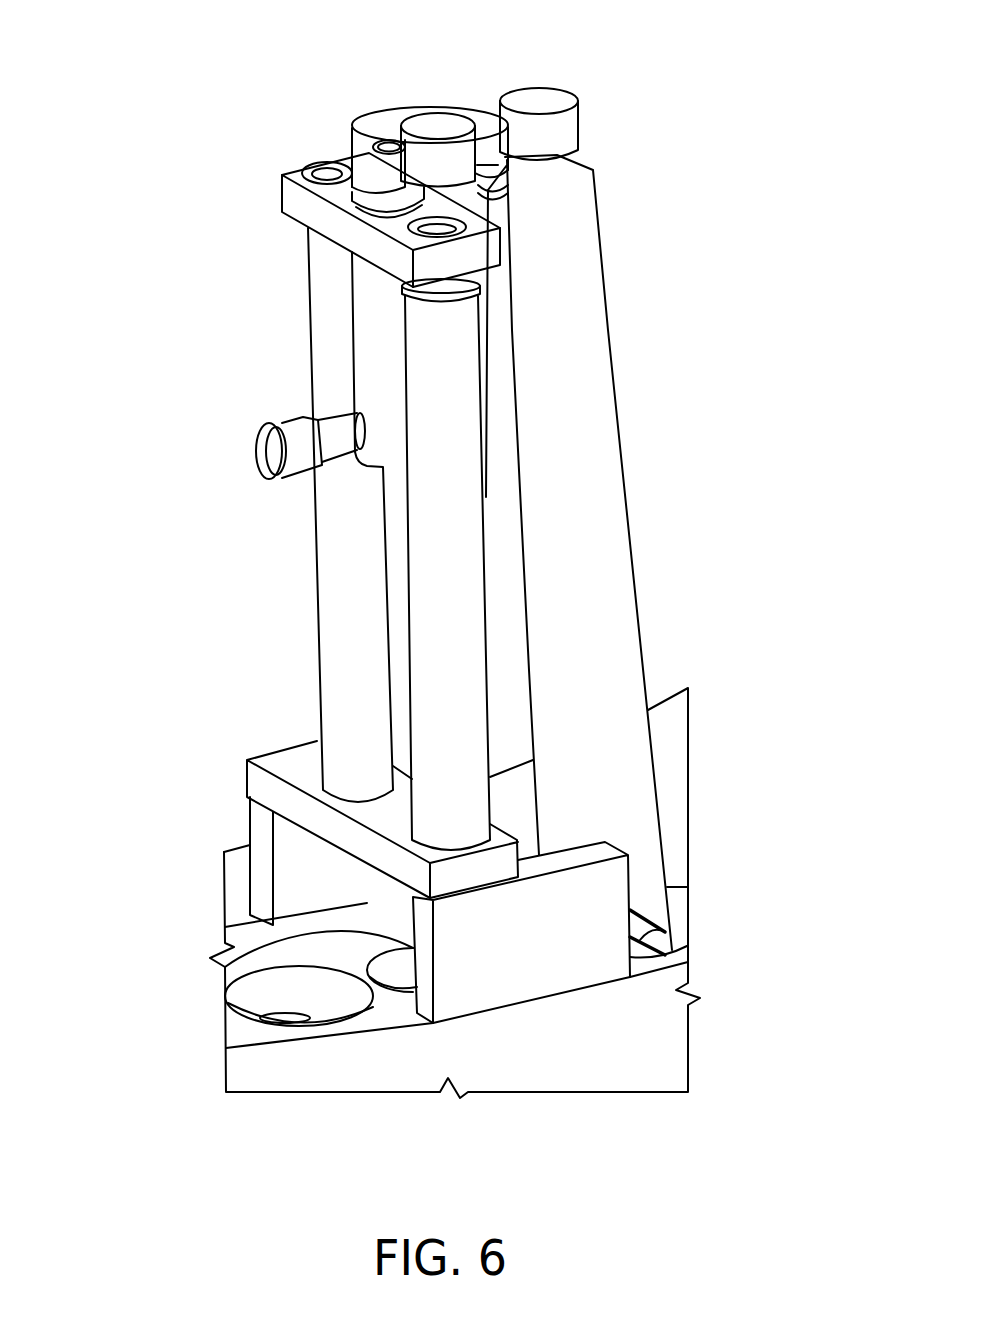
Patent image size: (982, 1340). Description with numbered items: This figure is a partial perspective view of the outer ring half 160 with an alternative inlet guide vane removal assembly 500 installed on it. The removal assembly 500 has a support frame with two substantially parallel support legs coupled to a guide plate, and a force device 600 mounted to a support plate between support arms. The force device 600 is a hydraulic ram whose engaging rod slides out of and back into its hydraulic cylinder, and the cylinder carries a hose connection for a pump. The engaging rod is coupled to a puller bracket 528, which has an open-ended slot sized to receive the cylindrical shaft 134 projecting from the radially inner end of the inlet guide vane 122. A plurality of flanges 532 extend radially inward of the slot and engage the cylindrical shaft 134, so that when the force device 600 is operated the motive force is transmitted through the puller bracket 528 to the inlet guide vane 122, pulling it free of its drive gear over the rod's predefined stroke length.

The puller bracket 528 is at (391, 112).
The cylindrical shaft 134 is at (422, 113).
The flanges 532 is at (398, 205).
The force device 600 is at (337, 360).
The inlet guide vane 122 is at (617, 800).
The inlet guide vane removal assembly 500 is at (238, 875).
The outer ring half 160 is at (640, 1010).